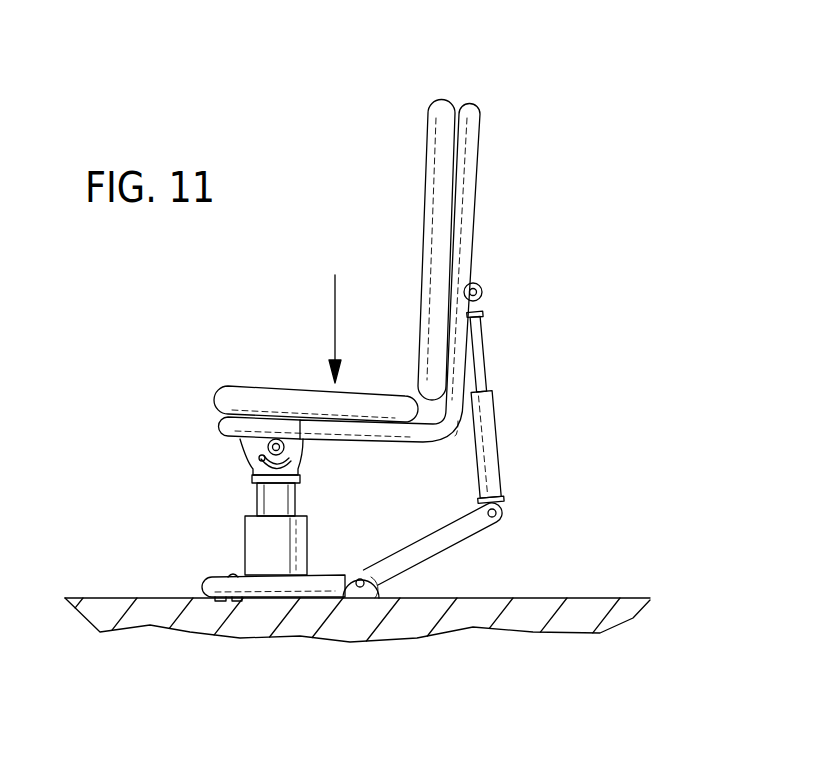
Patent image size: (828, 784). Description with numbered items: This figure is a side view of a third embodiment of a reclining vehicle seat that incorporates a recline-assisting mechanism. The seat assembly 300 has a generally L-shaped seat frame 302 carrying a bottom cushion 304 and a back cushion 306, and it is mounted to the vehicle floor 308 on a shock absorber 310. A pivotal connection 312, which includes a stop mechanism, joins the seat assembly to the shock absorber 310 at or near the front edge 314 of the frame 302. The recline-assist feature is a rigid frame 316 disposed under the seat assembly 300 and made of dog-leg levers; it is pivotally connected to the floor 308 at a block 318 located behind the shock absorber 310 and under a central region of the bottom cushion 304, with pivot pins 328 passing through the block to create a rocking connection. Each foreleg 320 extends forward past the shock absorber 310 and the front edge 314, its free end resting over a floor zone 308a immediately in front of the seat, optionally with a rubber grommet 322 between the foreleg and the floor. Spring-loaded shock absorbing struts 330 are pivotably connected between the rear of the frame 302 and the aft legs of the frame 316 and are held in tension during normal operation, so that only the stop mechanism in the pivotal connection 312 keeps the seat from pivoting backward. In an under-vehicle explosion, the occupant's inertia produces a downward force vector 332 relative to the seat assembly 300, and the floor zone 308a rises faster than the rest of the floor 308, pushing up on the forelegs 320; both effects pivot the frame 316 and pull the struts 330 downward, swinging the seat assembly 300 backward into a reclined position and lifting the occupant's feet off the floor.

The seat assembly 300 is at (547, 148).
The seat frame 302 is at (472, 204).
The bottom cushion 304 is at (386, 388).
The back cushion 306 is at (447, 98).
The vehicle floor 308 is at (600, 600).
The floor zone 308a is at (178, 598).
The shock absorber 310 is at (310, 542).
The pivotal connection 312 is at (308, 456).
The front edge 314 is at (225, 424).
The frame 316 is at (473, 540).
The block 318 is at (380, 596).
The foreleg 320 is at (270, 593).
The rubber grommet 322 is at (213, 597).
The pivot pin 328 is at (362, 588).
The shock absorbing strut 330 is at (497, 428).
The downward force vector 332 is at (333, 310).